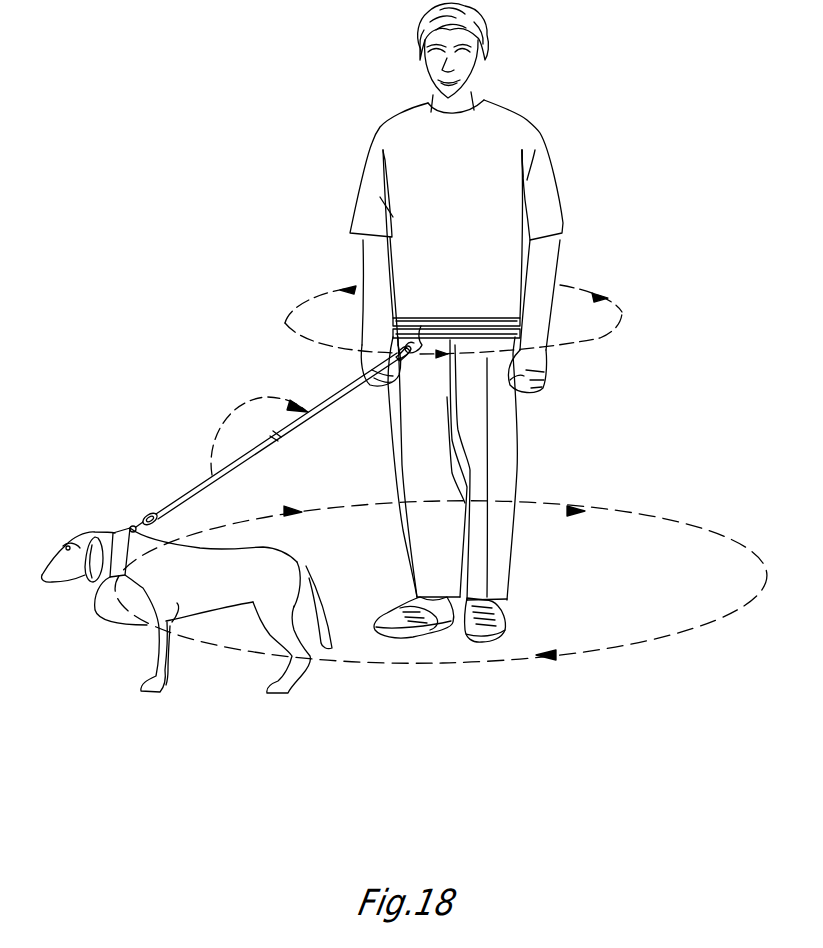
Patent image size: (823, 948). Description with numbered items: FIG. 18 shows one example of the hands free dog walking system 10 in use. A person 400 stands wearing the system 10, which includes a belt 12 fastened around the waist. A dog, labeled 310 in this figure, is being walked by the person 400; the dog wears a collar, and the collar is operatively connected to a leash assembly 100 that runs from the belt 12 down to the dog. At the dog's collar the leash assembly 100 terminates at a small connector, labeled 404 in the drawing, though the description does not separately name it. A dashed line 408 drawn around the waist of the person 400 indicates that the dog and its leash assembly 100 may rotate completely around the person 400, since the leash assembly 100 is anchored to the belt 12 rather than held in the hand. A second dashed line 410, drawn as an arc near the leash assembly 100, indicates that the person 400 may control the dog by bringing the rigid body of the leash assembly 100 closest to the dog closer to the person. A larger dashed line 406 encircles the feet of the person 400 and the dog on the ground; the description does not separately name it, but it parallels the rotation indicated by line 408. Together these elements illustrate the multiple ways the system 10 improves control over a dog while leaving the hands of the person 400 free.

The person 400 is at (385, 156).
The hands free dog walking system 10 is at (466, 315).
The belt 12 is at (392, 325).
The line 408 is at (561, 284).
The leash assembly 100 is at (326, 392).
The line 410 is at (211, 437).
The leash clip 404 is at (126, 530).
The dog 310 is at (264, 556).
The path of dog around user 406 is at (657, 520).